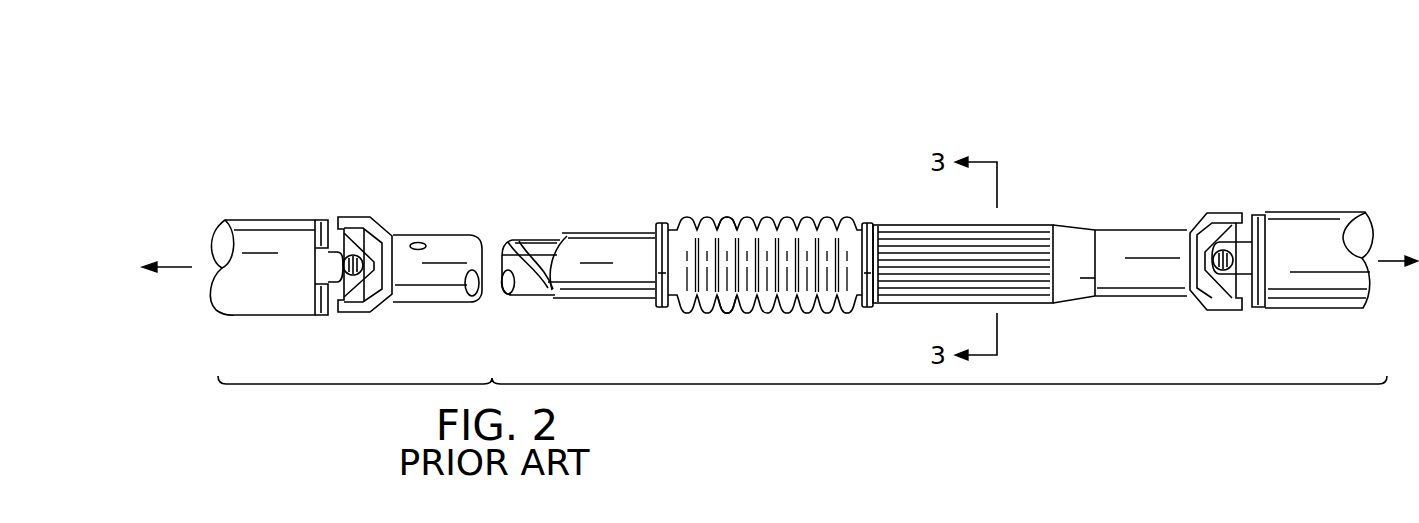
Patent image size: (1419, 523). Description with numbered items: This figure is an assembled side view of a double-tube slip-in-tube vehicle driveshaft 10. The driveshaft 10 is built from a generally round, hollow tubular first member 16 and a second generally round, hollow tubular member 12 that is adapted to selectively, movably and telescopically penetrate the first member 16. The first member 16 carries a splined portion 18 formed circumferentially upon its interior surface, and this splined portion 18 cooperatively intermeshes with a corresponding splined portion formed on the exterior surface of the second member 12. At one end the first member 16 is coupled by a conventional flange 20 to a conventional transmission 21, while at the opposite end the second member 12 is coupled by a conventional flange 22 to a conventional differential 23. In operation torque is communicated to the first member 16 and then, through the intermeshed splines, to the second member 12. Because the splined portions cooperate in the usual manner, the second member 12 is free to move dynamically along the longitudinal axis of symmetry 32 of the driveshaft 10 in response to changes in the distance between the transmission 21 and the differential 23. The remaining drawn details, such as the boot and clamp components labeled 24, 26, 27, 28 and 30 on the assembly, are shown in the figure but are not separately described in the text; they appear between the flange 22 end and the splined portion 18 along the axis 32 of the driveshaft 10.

The driveshaft 10 is at (841, 116).
The second member 12 is at (615, 247).
The first member 16 is at (1135, 248).
The splined portion 18 is at (912, 247).
The flange 20 is at (1216, 213).
The transmission 21 is at (1313, 235).
The flange 22 is at (352, 215).
The differential 23 is at (272, 238).
The inner shaft end 24 is at (541, 250).
The bellows boot 26 is at (705, 263).
The bellows convolution 27 is at (728, 216).
The clamp 28 is at (663, 307).
The clamp 30 is at (868, 312).
The longitudinal axis of symmetry 32 is at (1384, 259).